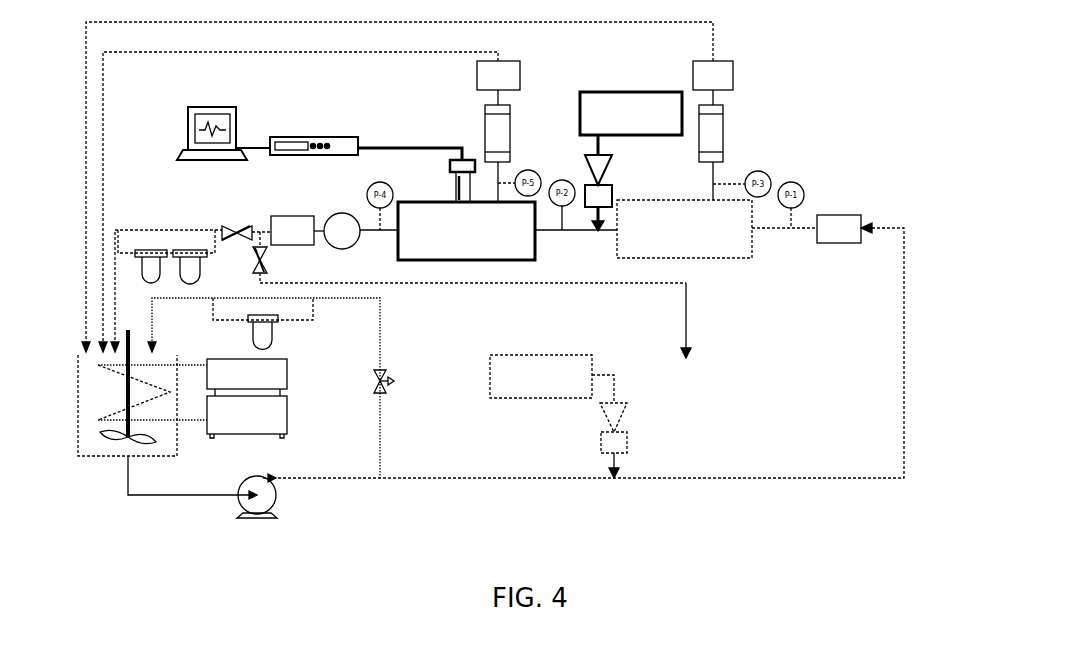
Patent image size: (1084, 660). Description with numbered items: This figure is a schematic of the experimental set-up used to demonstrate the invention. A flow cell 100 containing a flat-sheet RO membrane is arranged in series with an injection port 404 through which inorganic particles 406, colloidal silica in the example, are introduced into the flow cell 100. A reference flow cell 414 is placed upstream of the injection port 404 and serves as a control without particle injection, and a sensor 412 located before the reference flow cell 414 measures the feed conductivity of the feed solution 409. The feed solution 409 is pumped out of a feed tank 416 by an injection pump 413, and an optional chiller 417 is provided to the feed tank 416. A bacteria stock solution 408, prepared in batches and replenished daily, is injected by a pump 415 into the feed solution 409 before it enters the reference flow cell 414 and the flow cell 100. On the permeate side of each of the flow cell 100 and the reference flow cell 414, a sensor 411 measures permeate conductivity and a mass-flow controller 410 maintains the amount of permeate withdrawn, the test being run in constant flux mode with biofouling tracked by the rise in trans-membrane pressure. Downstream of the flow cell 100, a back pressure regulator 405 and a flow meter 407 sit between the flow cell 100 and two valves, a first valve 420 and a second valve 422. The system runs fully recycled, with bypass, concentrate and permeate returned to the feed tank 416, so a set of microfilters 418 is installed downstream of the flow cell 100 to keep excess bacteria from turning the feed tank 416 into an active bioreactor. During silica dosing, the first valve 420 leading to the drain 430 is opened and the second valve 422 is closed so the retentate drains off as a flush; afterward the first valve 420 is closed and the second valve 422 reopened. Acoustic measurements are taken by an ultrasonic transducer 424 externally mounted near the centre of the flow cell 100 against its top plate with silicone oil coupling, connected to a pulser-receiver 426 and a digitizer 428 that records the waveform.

The flow cell 100 is at (466, 231).
The injection port 404 is at (616, 160).
The back pressure regulator 405 is at (342, 240).
The inorganic particles 406 is at (631, 113).
The flow meter 407 is at (292, 230).
The bacteria stock solution 408 is at (541, 376).
The feed solution 409 is at (904, 290).
The mass-flow controller 410 is at (605, 153).
The sensor for measuring permeate conductivity 411 is at (605, 83).
The sensor 412 is at (844, 229).
The injection pump 413 is at (202, 497).
The reference flow cell 414 is at (684, 229).
The pump 415 is at (597, 415).
The feed tank 416 is at (142, 393).
The chiller 417 is at (247, 398).
The microfilters 418 is at (260, 333).
The first valve 420 is at (469, 257).
The second valve 422 is at (237, 223).
The ultrasonic transducer 424 is at (463, 155).
The pulser-receiver 426 is at (326, 136).
The digitizer 428 is at (212, 148).
The drain 430 is at (699, 335).